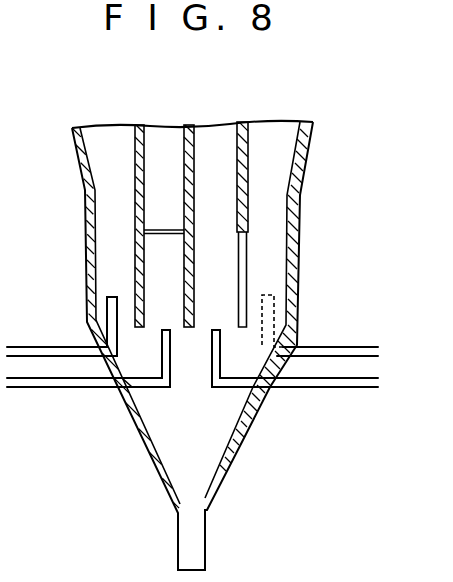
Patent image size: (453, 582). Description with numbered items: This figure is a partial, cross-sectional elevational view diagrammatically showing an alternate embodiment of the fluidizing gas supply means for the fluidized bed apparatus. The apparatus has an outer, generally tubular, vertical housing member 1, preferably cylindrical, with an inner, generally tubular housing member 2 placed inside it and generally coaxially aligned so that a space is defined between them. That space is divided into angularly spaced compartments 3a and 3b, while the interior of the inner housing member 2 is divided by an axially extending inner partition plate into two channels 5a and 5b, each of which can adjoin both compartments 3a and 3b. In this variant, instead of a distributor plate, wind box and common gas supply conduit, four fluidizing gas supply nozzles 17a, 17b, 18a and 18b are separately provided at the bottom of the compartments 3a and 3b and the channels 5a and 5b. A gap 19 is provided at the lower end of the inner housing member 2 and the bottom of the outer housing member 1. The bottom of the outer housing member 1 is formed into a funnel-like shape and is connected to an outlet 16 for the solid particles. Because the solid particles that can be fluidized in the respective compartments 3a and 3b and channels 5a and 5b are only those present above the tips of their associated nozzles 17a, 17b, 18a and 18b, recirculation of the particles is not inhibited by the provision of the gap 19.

The outer housing member 1 is at (300, 168).
The inner housing member 2 is at (250, 152).
The compartment 3a is at (115, 143).
The compartment 3b is at (287, 125).
The channel 5a is at (160, 152).
The channel 5b is at (215, 148).
The outlet 16 is at (205, 532).
The fluidizing gas supply nozzle 17a is at (58, 346).
The fluidizing gas supply nozzle 17b is at (337, 346).
The fluidizing gas supply nozzle 18a is at (42, 389).
The fluidizing gas supply nozzle 18b is at (306, 388).
The gap 19 is at (134, 351).